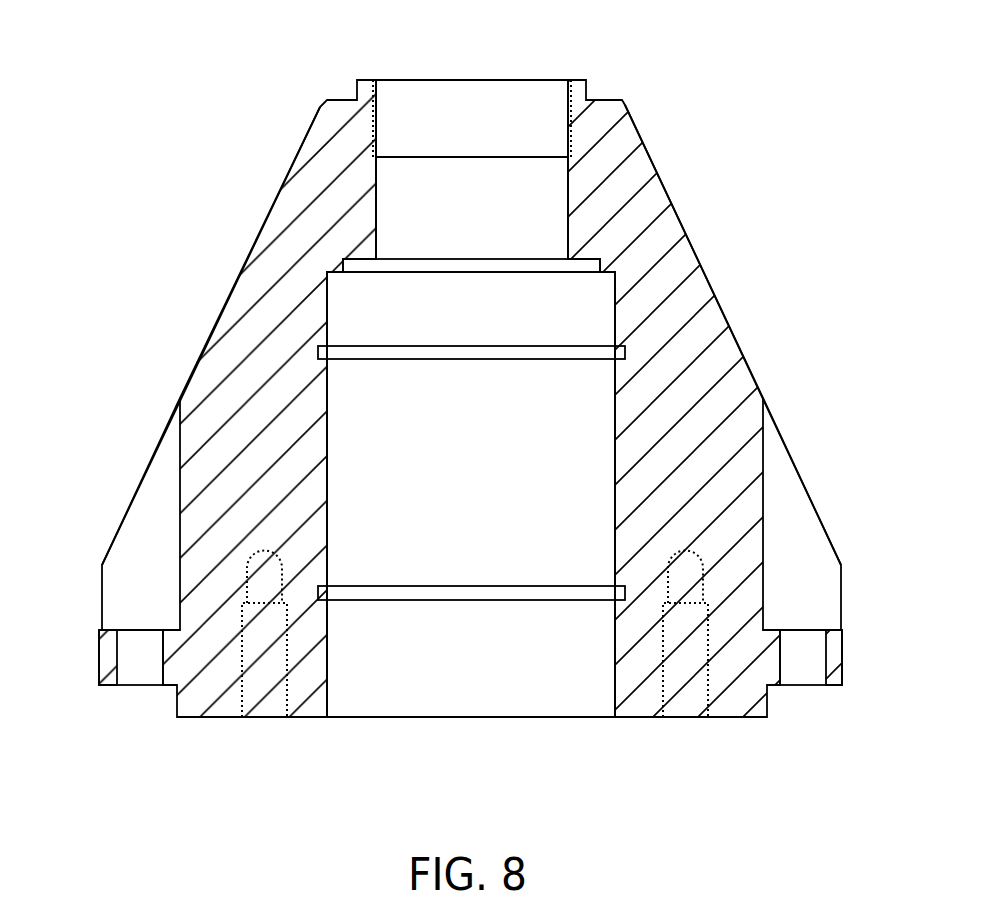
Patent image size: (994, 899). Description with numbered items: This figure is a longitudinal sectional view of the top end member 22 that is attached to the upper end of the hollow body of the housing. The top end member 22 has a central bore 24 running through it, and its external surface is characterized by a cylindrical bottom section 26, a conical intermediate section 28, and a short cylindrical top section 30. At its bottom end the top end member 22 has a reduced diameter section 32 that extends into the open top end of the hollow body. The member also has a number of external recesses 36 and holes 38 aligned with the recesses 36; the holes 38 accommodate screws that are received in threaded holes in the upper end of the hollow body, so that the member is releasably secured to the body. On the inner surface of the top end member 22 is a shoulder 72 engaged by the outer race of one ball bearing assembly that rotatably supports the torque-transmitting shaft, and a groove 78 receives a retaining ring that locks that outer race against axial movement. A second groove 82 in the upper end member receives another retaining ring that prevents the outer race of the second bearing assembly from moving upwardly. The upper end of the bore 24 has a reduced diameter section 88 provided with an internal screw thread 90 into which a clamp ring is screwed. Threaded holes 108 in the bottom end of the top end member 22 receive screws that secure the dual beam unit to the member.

The top end member 22 is at (176, 326).
The central bore 24 is at (328, 671).
The cylindrical bottom section 26 is at (844, 659).
The conical intermediate section 28 is at (730, 277).
The short cylindrical top section 30 is at (588, 91).
The reduced diameter section 32 is at (767, 703).
The external recesses 36 is at (167, 488).
The holes 38 is at (142, 673).
The shoulder 72 is at (370, 260).
The groove 78 is at (450, 348).
The groove 82 is at (425, 588).
The reduced diameter section 88 is at (556, 205).
The internal screw thread 90 is at (370, 127).
The threaded holes 108 is at (240, 657).